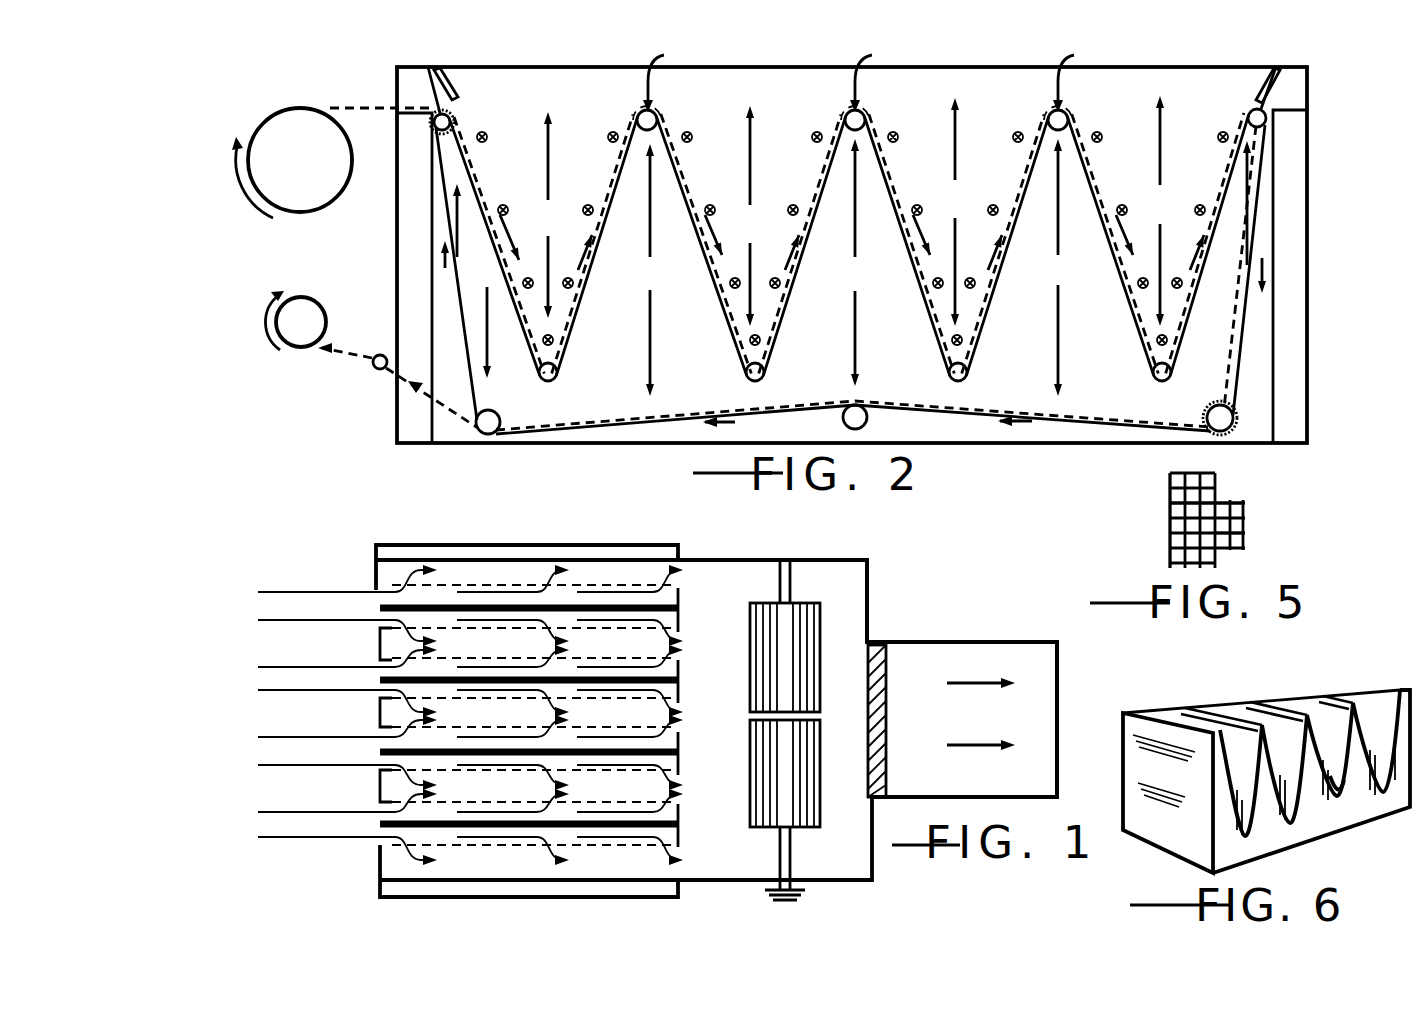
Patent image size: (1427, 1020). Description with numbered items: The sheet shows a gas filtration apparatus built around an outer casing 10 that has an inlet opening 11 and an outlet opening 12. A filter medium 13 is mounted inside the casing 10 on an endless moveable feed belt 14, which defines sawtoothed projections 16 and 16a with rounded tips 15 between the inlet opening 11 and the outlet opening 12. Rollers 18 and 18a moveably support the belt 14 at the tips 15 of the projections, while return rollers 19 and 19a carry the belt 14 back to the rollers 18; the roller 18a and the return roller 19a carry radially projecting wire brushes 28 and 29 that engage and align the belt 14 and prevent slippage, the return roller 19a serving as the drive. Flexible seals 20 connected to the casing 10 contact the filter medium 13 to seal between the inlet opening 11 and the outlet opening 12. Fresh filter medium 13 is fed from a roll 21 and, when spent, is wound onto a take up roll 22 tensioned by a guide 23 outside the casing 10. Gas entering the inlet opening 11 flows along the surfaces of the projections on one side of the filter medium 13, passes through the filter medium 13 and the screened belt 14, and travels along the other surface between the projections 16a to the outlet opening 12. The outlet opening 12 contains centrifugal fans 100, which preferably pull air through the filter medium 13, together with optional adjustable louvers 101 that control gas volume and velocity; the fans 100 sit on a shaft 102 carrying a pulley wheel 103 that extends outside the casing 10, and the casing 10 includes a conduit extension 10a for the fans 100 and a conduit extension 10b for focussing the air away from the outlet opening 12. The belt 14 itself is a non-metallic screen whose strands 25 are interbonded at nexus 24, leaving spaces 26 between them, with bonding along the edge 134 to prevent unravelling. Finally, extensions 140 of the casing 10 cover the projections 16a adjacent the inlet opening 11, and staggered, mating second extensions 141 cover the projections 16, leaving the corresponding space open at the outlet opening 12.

In FIG. 2, the outer casing 10 is at (1140, 67).
In FIG. 1, the outer casing 10 is at (540, 546).
In FIG. 1, the conduit extension 10a is at (875, 558).
In FIG. 1, the conduit extension 10b is at (987, 641).
In FIG. 1, the inlet opening 11 is at (385, 585).
In FIG. 1, the outlet opening 12 is at (738, 565).
In FIG. 2, the filter medium 13 is at (358, 106).
In FIG. 1, the filter medium 13 is at (610, 560).
In FIG. 2, the endless moveable feed belt 14 is at (476, 310).
In FIG. 2, the rounded tip 15 is at (1158, 380).
In FIG. 2, the sawtoothed projection 16 is at (855, 211).
In FIG. 6, the sawtoothed projection 16 is at (1320, 686).
In FIG. 2, the sawtoothed projection 16a is at (853, 267).
In FIG. 6, the sawtoothed projection 16a is at (1355, 750).
In FIG. 2, the rollers 18 is at (660, 112).
In FIG. 1, the rollers 18 is at (680, 610).
In FIG. 2, the roller 18a is at (453, 116).
In FIG. 2, the return roller 19 is at (870, 430).
In FIG. 2, the return roller 19a is at (489, 435).
In FIG. 2, the flexible seals 20 is at (452, 97).
In FIG. 2, the roll 21 is at (278, 128).
In FIG. 2, the take up roll 22 is at (302, 296).
In FIG. 2, the guide 23 is at (376, 354).
In FIG. 5, the nexus 24 is at (1210, 490).
In FIG. 5, the strands 25 is at (1225, 503).
In FIG. 5, the spaces 26 is at (1232, 533).
In FIG. 2, the wire brush 28 is at (452, 137).
In FIG. 2, the wire brush 29 is at (1233, 415).
In FIG. 1, the centrifugal fans 100 is at (823, 638).
In FIG. 1, the adjustable louvers 101 is at (890, 652).
In FIG. 1, the shaft 102 is at (792, 568).
In FIG. 1, the pulley wheel 103 is at (812, 898).
In FIG. 5, the edge 134 is at (1170, 527).
In FIG. 6, the extensions 140 is at (1358, 790).
In FIG. 6, the second extensions 141 is at (1215, 700).